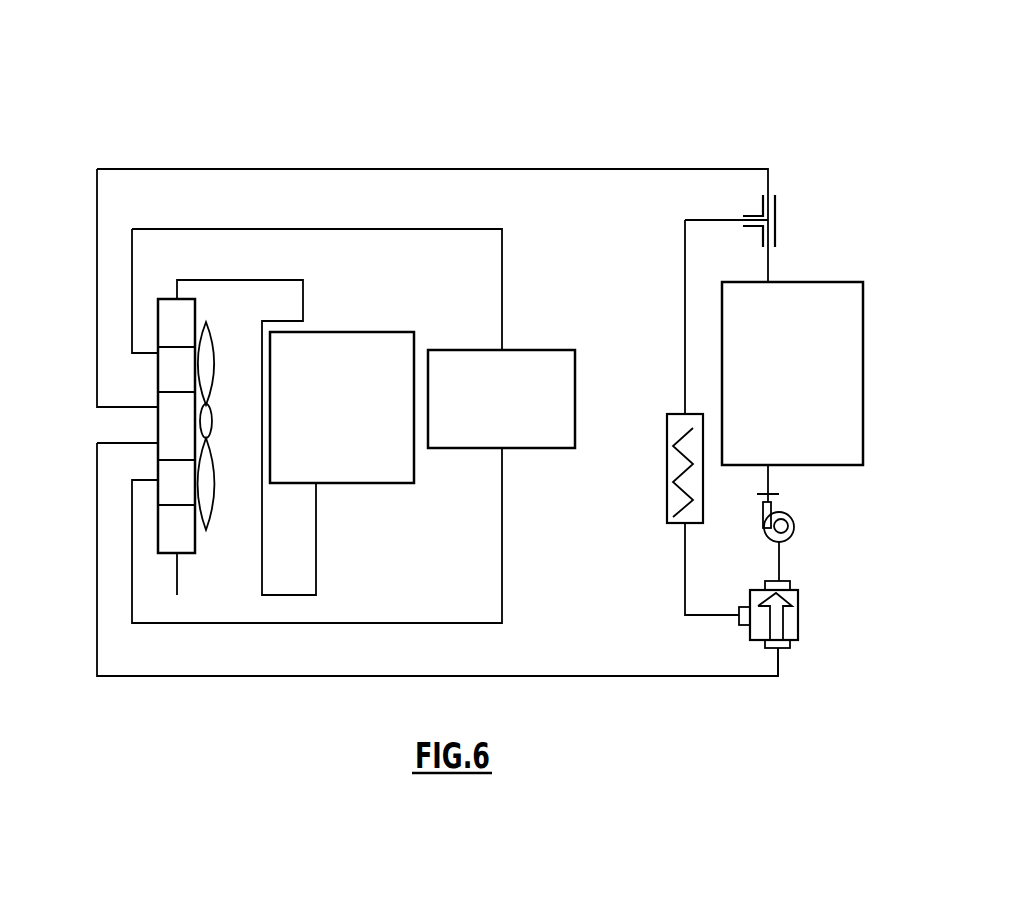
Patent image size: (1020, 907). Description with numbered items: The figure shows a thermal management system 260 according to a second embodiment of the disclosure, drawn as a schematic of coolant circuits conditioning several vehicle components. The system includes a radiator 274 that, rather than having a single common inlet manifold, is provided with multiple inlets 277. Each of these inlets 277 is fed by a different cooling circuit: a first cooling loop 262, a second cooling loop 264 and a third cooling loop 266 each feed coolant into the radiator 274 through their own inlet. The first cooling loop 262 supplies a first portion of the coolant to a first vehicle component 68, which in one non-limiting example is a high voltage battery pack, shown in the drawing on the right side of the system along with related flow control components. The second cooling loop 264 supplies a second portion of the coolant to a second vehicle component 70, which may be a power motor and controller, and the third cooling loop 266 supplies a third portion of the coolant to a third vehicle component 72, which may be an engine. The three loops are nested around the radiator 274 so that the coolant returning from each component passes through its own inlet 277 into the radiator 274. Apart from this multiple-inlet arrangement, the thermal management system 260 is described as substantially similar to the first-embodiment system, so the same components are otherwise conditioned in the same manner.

The thermal management system 260 is at (437, 357).
The first cooling loop 262 is at (769, 143).
The second cooling loop 264 is at (530, 240).
The third cooling loop 266 is at (268, 264).
The radiator 274 is at (161, 280).
The inlets 277 is at (178, 288).
The third vehicle component 72 is at (372, 332).
The second vehicle component 70 is at (540, 350).
The first vehicle component 68 is at (824, 282).